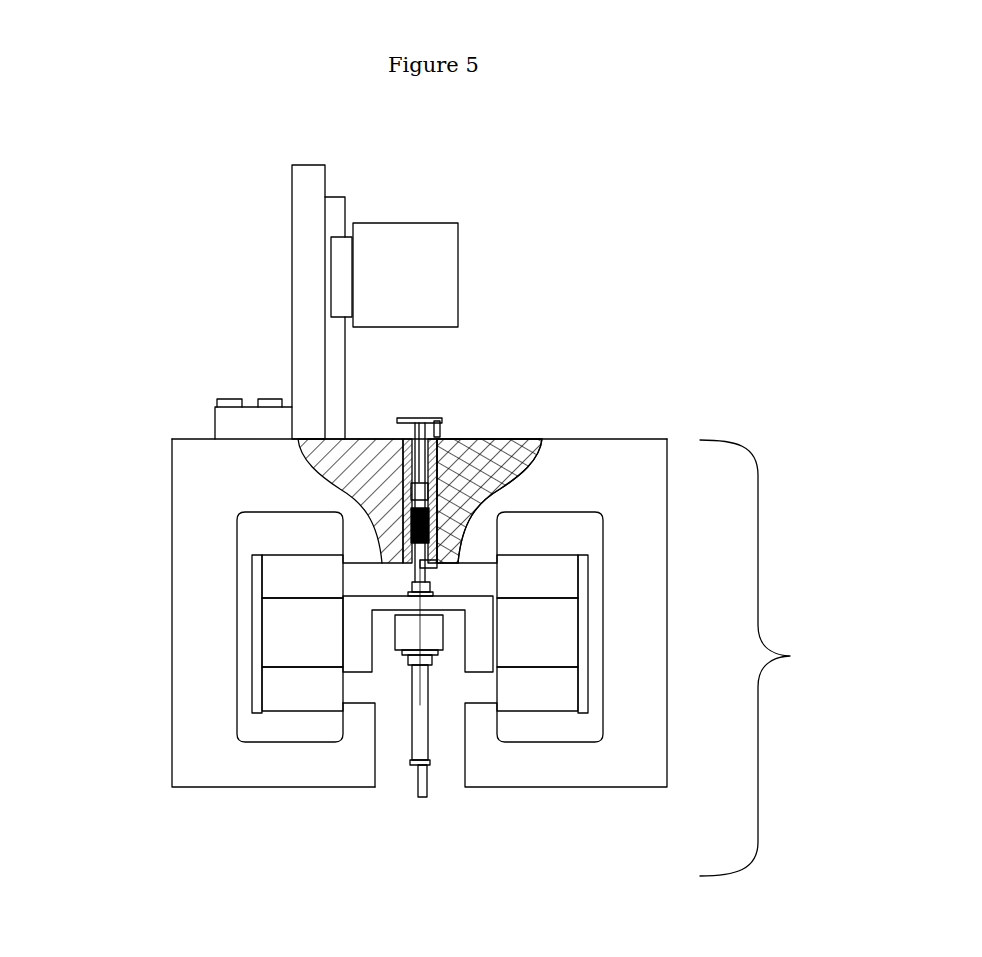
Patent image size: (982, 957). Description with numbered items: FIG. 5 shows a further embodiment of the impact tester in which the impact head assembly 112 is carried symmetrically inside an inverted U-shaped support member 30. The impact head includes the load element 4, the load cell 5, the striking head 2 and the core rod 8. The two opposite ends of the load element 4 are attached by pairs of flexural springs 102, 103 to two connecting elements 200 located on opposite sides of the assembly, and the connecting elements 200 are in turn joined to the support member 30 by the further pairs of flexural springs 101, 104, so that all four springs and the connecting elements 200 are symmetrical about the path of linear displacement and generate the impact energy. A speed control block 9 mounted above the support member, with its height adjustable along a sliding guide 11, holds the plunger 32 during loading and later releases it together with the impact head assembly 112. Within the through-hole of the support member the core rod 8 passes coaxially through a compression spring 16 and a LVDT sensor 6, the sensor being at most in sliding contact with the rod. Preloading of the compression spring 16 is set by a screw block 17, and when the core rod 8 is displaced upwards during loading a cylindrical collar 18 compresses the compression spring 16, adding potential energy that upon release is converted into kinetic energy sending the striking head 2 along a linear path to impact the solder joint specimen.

The striking head 2 is at (428, 799).
The load element 4 is at (487, 615).
The load cell 5 is at (428, 630).
The LVDT sensor 6 is at (441, 432).
The core rod 8 is at (438, 565).
The speed control block 9 is at (422, 265).
The sliding guide 11 is at (336, 232).
The compression spring 16 is at (540, 437).
The screw block 17 is at (430, 510).
The cylindrical collar 18 is at (436, 584).
The inverted U-shaped support member 30 is at (188, 477).
The plunger 32 is at (439, 417).
The flexural spring 101 is at (337, 716).
The flexural spring 102 is at (264, 672).
The flexural spring 103 is at (261, 598).
The flexural spring 104 is at (261, 554).
The impact head assembly 112 is at (782, 658).
The connecting element 200 is at (251, 628).